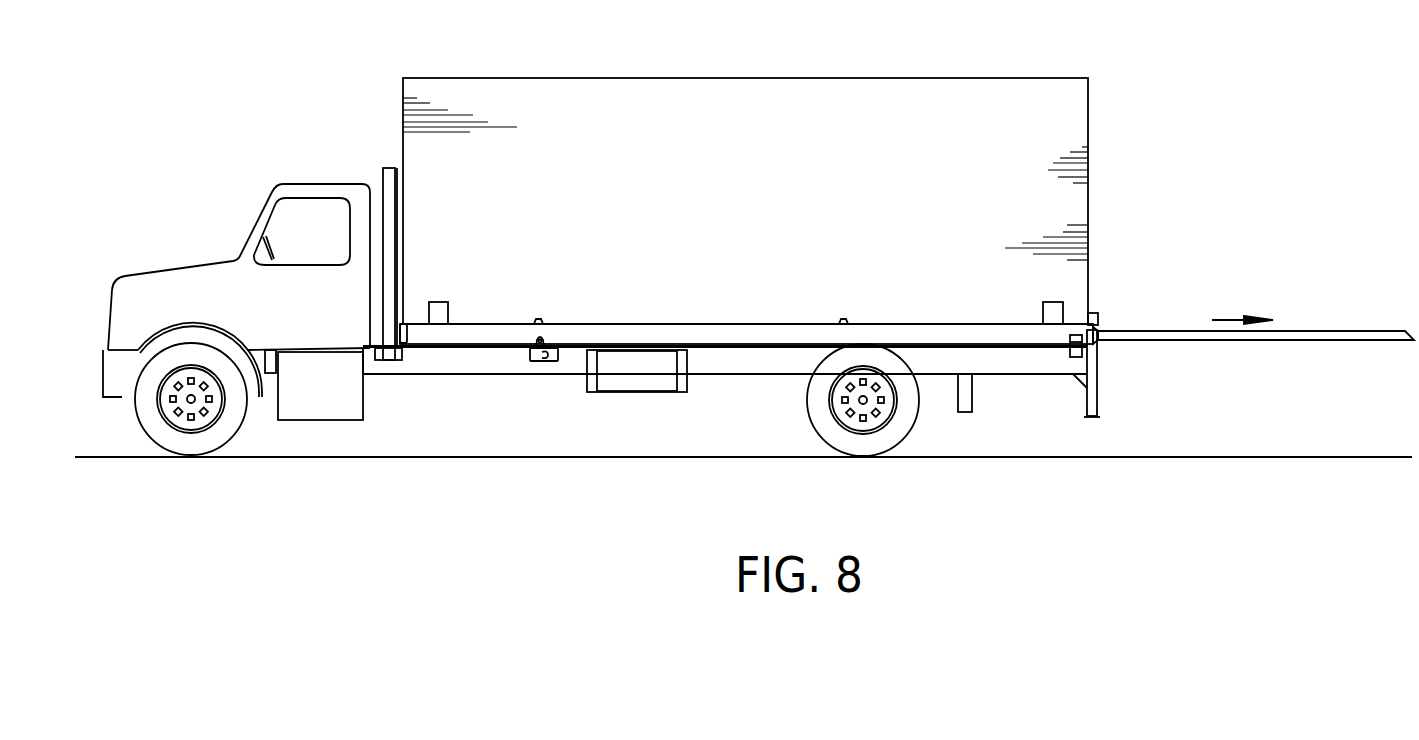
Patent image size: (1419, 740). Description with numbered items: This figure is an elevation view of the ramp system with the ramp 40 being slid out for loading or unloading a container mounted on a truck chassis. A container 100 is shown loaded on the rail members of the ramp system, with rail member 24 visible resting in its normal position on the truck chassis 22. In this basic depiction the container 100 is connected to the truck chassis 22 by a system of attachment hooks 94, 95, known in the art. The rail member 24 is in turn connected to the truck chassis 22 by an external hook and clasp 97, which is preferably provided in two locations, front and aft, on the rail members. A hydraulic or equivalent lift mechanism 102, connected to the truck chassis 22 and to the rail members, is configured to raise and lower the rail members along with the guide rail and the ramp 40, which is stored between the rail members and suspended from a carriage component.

The lift mechanism 102 is at (388, 177).
The container 100 is at (1047, 113).
The rail member 24 is at (730, 333).
The truck chassis 22 is at (760, 364).
The attachment hook 94 is at (538, 323).
The attachment hook 95 is at (843, 323).
The external hook and clasp 97 is at (540, 362).
The ramp 40 is at (1350, 331).